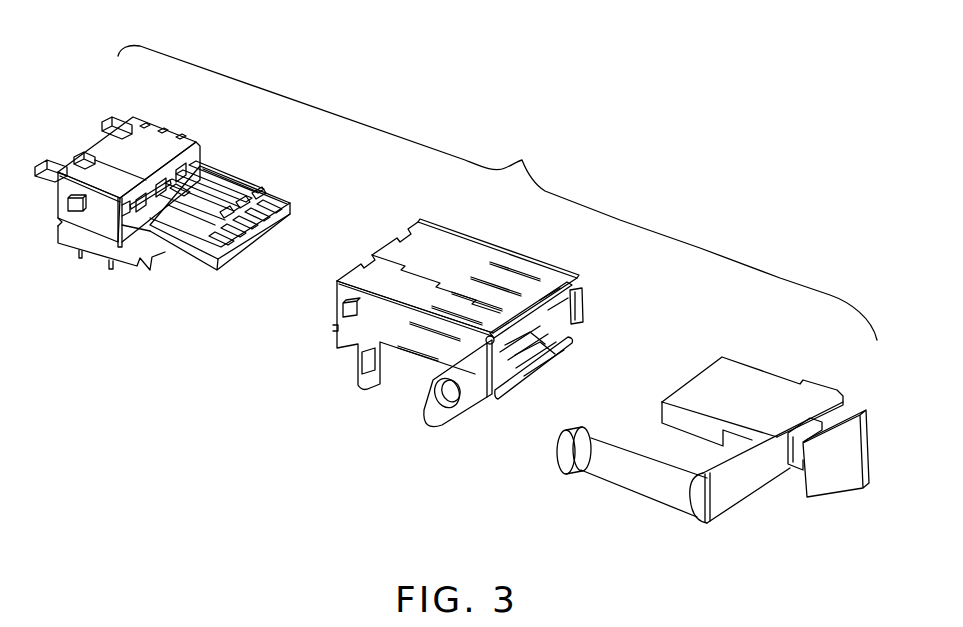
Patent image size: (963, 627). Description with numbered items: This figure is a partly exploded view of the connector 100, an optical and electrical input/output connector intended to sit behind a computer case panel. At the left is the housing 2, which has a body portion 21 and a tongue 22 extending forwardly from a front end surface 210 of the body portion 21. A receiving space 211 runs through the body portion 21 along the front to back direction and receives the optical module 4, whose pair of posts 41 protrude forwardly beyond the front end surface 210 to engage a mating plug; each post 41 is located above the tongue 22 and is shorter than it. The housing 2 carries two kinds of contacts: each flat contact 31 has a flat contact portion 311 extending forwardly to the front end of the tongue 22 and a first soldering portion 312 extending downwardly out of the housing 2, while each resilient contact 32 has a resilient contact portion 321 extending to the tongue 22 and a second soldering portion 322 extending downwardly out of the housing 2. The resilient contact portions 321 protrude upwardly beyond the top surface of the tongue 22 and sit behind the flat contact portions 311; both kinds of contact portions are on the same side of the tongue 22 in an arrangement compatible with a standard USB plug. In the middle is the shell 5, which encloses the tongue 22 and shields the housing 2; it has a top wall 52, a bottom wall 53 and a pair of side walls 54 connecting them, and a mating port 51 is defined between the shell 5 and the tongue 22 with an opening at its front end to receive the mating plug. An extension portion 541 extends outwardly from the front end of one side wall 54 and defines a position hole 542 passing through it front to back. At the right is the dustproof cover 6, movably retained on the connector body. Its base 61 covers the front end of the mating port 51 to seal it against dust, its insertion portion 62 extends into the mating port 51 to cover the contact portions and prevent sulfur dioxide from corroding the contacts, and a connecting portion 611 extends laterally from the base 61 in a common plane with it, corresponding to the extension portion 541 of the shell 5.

The connector 100 is at (497, 192).
The housing 2 is at (134, 119).
The body portion 21 is at (153, 147).
The front end surface 210 is at (200, 152).
The receiving space 211 is at (183, 193).
The tongue 22 is at (206, 262).
The flat contact 31 is at (275, 210).
The flat contact portion 311 is at (232, 235).
The resilient contact 32 is at (212, 176).
The resilient contact portion 321 is at (250, 184).
The second soldering portion 322 is at (79, 252).
The first soldering portion 312 is at (110, 266).
The optical module 4 is at (150, 224).
The post 41 is at (128, 211).
The shell 5 is at (513, 247).
The mating port 51 is at (556, 338).
The top wall 52 is at (460, 238).
The bottom wall 53 is at (520, 360).
The side wall 54 is at (372, 325).
The extension portion 541 is at (472, 396).
The position hole 542 is at (444, 405).
The dustproof cover 6 is at (787, 360).
The base 61 is at (833, 412).
The connecting portion 611 is at (742, 486).
The insertion portion 62 is at (754, 377).